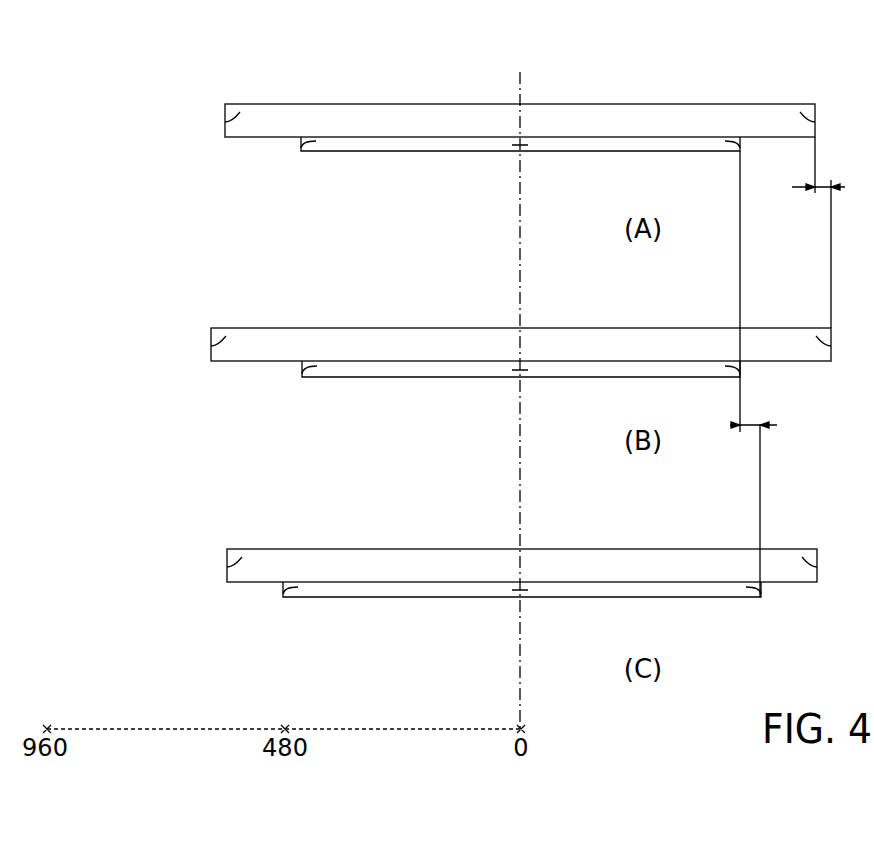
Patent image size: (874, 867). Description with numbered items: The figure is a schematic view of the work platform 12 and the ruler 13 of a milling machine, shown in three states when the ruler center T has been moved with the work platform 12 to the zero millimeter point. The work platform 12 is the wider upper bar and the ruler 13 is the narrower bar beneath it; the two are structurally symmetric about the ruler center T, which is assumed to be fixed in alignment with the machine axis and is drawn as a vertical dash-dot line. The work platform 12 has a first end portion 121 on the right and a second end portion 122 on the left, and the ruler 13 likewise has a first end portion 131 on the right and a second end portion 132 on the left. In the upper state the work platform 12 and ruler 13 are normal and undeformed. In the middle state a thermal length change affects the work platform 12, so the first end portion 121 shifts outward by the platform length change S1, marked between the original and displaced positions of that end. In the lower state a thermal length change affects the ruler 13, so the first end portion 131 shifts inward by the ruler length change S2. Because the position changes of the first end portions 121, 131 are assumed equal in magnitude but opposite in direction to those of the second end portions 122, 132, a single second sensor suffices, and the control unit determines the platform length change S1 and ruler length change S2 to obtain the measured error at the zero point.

The work platform 12 is at (398, 103).
The ruler 13 is at (338, 144).
The first end portion of the work platform 121 is at (814, 121).
The second end portion of the work platform 122 is at (228, 121).
The first end portion of the ruler 131 is at (722, 146).
The second end portion of the ruler 132 is at (313, 152).
The ruler center T is at (522, 145).
The platform length change S1 is at (819, 232).
The ruler length change S2 is at (753, 374).